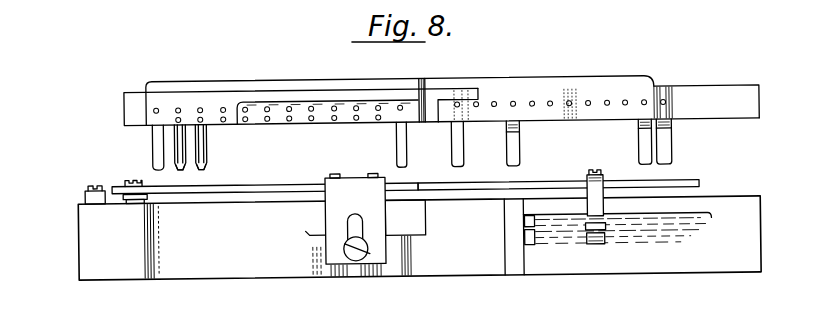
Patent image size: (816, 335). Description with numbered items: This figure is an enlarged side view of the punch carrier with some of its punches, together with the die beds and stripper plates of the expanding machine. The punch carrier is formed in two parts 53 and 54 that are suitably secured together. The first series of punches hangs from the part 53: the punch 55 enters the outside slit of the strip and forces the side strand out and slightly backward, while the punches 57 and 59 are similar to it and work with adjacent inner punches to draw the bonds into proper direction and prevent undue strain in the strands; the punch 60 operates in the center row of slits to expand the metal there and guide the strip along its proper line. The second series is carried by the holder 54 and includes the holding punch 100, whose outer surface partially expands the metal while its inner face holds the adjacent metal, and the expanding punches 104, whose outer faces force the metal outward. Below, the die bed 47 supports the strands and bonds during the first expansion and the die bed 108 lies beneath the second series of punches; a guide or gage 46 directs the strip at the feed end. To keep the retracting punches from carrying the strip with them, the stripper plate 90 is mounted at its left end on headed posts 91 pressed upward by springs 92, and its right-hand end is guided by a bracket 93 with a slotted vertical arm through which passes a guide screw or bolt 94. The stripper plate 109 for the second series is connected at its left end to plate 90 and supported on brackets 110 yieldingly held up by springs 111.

The guide or gage 46 is at (86, 182).
The die bed 47 is at (252, 268).
The punch carrier part 53 is at (230, 95).
The punch carrier part (holder) 54 is at (669, 93).
The punch 55 is at (153, 139).
The punch 57 is at (186, 168).
The punch 59 is at (207, 141).
The punch 60 is at (397, 142).
The stripper plate 90 is at (260, 190).
The headed post 91 is at (128, 177).
The spring 92 is at (123, 195).
The bracket 93 is at (355, 218).
The guide screw or bolt 94 is at (346, 257).
The holding punch 100 is at (457, 146).
The expanding punch 104 is at (520, 147).
The die bed 108 is at (681, 261).
The stripper plate 109 is at (700, 185).
The bracket 110 is at (597, 190).
The spring 111 is at (604, 247).